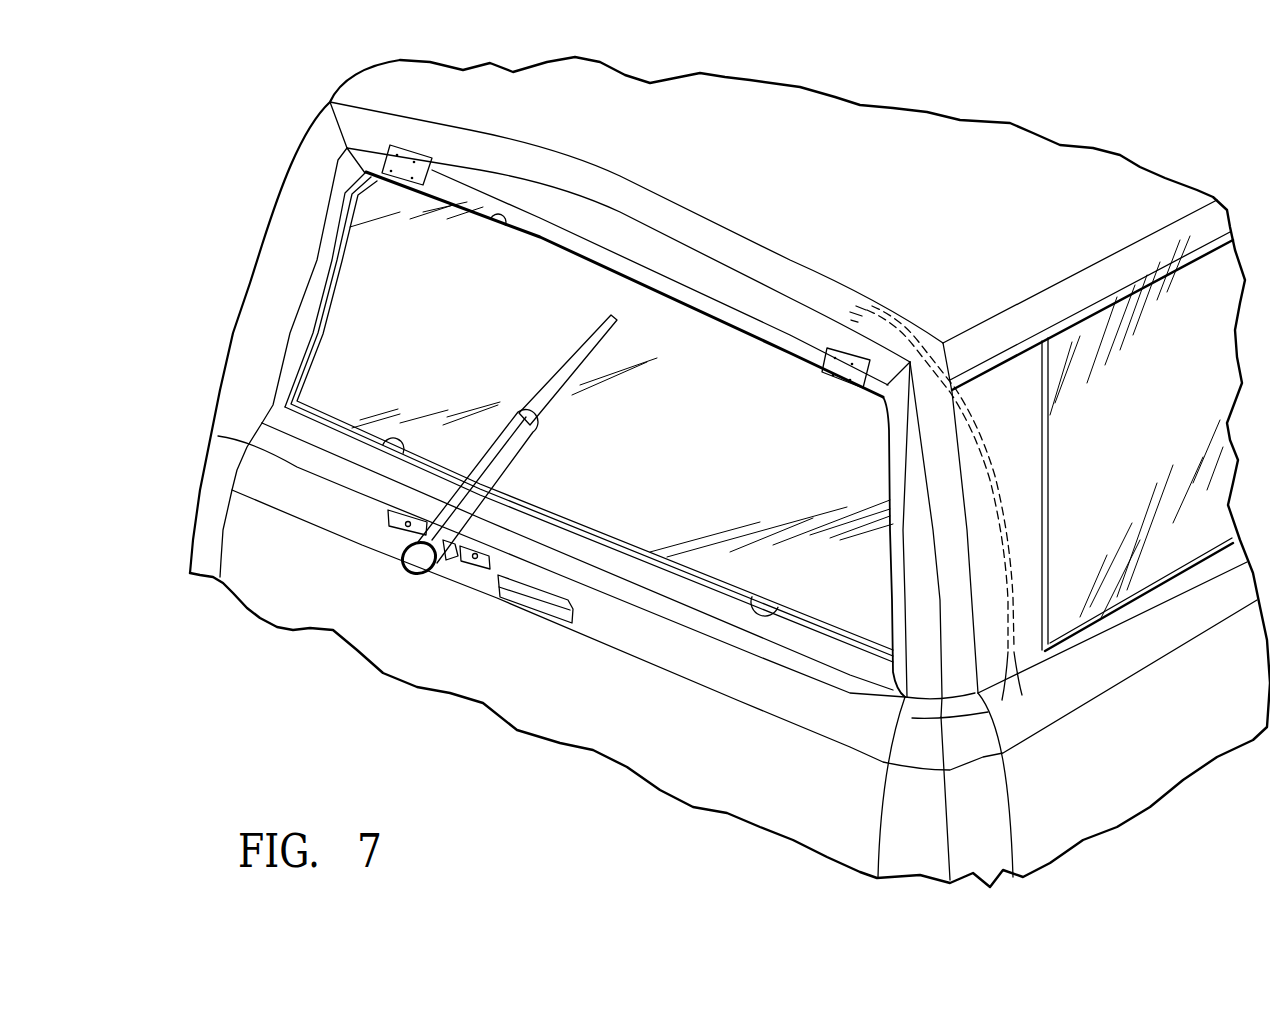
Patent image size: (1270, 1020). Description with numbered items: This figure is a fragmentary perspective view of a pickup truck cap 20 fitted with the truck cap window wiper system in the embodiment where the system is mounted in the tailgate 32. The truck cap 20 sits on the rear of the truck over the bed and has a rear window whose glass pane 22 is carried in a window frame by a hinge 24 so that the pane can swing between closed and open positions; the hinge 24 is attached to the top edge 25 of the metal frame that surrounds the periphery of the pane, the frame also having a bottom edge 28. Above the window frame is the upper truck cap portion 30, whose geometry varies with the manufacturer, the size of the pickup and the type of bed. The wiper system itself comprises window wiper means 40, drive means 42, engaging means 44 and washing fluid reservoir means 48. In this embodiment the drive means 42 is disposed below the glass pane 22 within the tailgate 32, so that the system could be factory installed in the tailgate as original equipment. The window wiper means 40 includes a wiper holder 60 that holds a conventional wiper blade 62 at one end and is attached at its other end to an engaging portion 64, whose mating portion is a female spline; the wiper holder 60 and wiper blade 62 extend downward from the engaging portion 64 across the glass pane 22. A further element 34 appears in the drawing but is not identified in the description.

The truck cap 20 is at (1030, 103).
The glass pane 22 is at (867, 604).
The hinge 24 is at (407, 160).
The top edge 25 is at (572, 212).
The bottom edge 28 is at (627, 278).
The upper truck cap portion 30 is at (382, 440).
The tailgate 32 is at (490, 215).
The lower retaining clip 34 is at (752, 592).
The window wiper means 40 is at (600, 431).
The drive means 42 is at (437, 585).
The engaging means 44 is at (397, 577).
The washing fluid reservoir means 48 is at (1029, 512).
The wiper holder 60 is at (510, 443).
The wiper blade 62 is at (602, 340).
The engaging portion 64 is at (417, 560).